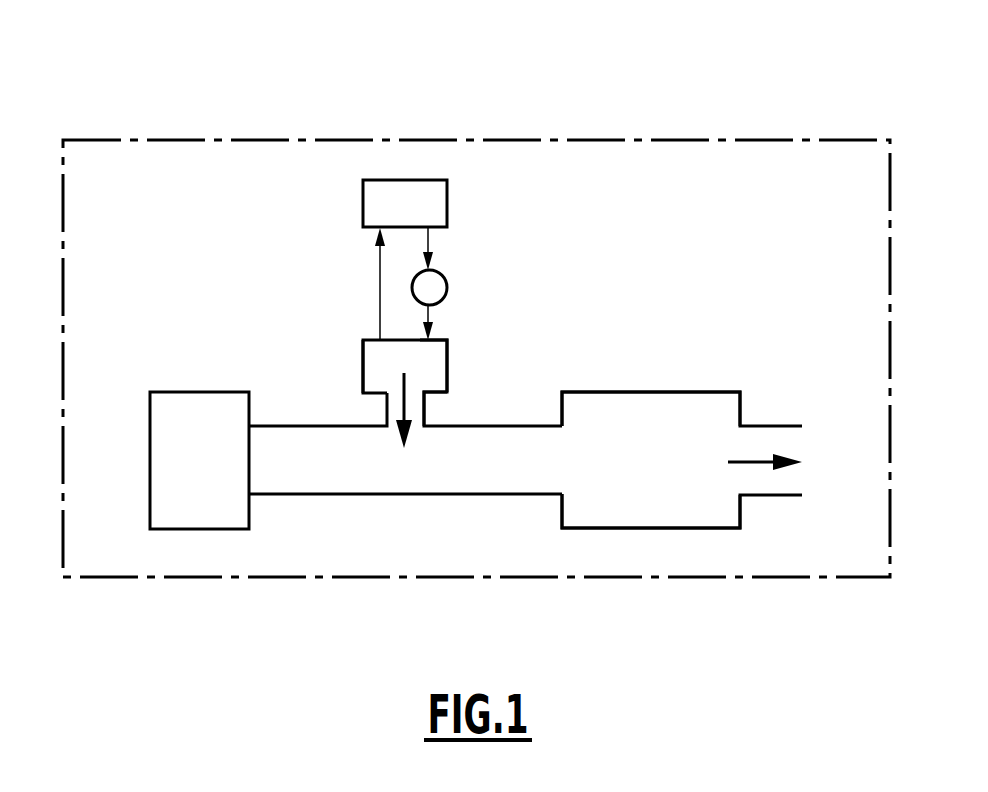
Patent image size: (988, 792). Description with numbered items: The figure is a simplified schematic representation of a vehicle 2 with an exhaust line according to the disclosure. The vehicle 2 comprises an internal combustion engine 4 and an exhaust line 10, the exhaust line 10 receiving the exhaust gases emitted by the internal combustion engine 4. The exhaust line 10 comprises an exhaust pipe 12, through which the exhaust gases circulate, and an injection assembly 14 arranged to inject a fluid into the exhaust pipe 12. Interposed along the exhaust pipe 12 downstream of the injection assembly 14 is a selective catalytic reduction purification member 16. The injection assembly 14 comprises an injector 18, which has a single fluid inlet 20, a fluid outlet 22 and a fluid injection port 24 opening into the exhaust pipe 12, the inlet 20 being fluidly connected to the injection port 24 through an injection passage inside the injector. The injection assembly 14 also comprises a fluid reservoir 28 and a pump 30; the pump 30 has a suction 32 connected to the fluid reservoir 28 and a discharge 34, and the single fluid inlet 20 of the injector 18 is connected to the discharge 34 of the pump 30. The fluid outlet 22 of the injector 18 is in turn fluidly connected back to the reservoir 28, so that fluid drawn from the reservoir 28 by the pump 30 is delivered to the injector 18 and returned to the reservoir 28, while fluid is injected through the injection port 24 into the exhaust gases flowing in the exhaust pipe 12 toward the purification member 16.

The vehicle 2 is at (61, 138).
The internal combustion engine 4 is at (191, 470).
The exhaust line 10 is at (577, 216).
The exhaust pipe 12 is at (282, 424).
The injection assembly 14 is at (449, 341).
The selective catalytic reduction purification member 16 is at (645, 391).
The injector 18 is at (362, 352).
The single fluid inlet 20 is at (431, 343).
The fluid outlet 22 is at (379, 340).
The fluid injection port 24 is at (424, 401).
The fluid reservoir 28 is at (405, 203).
The pump 30 is at (441, 279).
The suction 32 is at (432, 270).
The discharge 34 is at (438, 306).